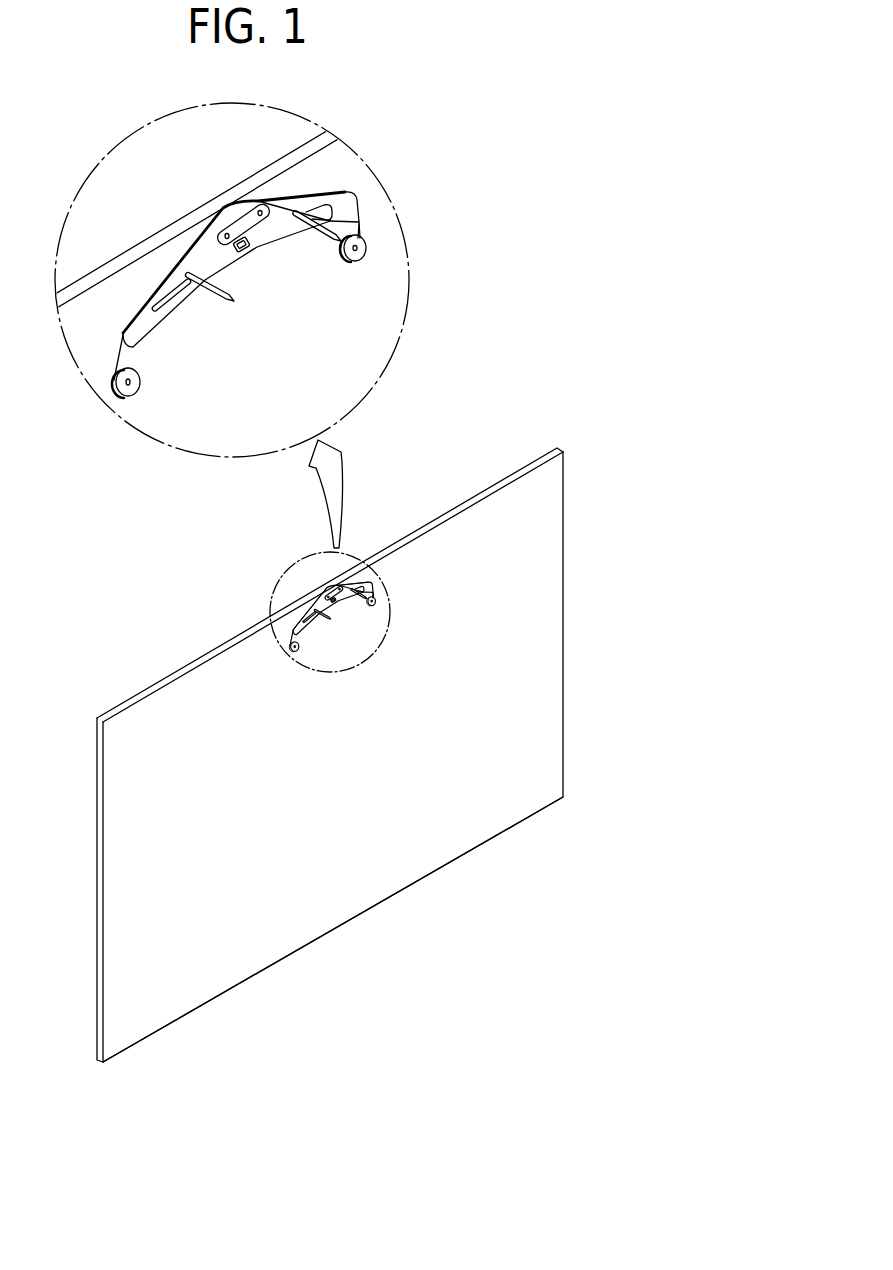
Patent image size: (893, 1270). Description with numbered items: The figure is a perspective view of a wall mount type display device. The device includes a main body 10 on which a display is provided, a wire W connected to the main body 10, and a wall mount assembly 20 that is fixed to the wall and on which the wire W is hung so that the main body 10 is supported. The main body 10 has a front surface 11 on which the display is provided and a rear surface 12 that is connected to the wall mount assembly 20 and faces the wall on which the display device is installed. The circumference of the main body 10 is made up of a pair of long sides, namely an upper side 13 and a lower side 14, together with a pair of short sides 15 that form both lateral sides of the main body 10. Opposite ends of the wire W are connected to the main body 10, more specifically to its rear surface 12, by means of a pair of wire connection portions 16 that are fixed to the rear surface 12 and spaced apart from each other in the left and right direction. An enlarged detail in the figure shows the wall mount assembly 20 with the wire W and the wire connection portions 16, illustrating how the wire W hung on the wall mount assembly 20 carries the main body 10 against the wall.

The main body 10 is at (309, 716).
The front surface 11 is at (330, 583).
The rear surface 12 is at (333, 929).
The upper side 13 is at (333, 587).
The lower side 14 is at (333, 757).
The short sides 15 is at (79, 890).
The wire connection portions 16 is at (279, 351).
The wall mount assembly 20 is at (279, 387).
The wire W is at (278, 292).